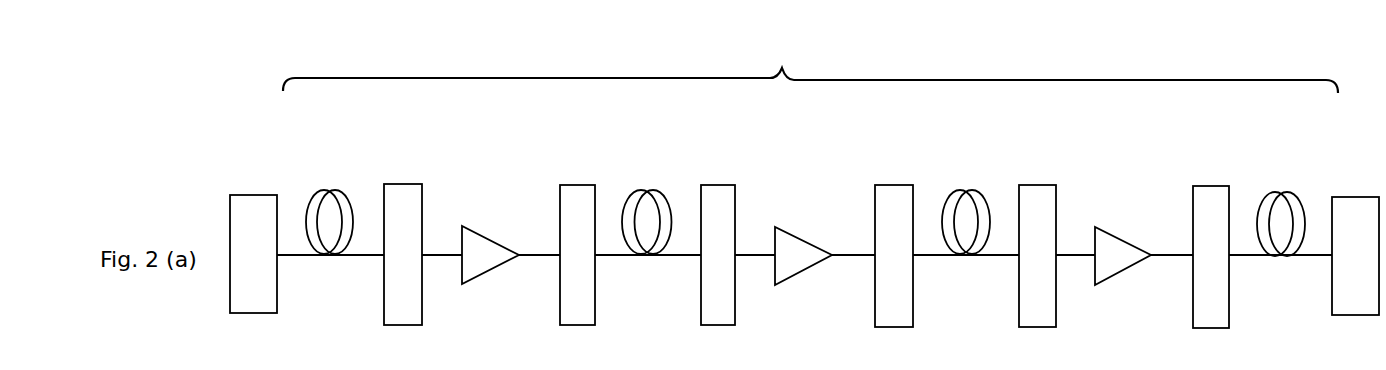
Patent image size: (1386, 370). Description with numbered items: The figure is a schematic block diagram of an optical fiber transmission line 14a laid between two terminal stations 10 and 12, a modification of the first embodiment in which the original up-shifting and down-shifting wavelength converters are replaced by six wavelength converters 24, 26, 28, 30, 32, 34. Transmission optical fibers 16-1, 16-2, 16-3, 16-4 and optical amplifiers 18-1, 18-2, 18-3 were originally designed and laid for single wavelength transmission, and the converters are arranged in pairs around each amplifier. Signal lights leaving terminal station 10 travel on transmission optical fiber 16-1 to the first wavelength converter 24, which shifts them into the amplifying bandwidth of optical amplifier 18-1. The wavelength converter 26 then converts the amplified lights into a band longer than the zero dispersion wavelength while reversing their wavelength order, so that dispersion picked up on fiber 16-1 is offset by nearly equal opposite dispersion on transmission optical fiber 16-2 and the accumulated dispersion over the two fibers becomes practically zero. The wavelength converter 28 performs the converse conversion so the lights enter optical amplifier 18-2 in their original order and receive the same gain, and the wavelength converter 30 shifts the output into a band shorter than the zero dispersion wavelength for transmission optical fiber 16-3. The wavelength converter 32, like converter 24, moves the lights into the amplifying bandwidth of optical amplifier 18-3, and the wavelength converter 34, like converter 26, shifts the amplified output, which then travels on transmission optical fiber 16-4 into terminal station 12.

The terminal station 10 is at (253, 210).
The terminal station 12 is at (1355, 207).
The optical fiber transmission line 14a is at (810, 62).
The transmission optical fiber 16-1 is at (343, 200).
The transmission optical fiber 16-2 is at (660, 200).
The transmission optical fiber 16-3 is at (980, 202).
The transmission optical fiber 16-4 is at (1290, 198).
The optical amplifier 18-1 is at (487, 247).
The optical amplifier 18-2 is at (807, 253).
The optical amplifier 18-3 is at (1122, 252).
The wavelength converter 24 is at (408, 187).
The wavelength converter 26 is at (580, 188).
The wavelength converter 28 is at (717, 188).
The wavelength converter 30 is at (892, 190).
The wavelength converter 32 is at (1037, 190).
The wavelength converter 34 is at (1213, 192).